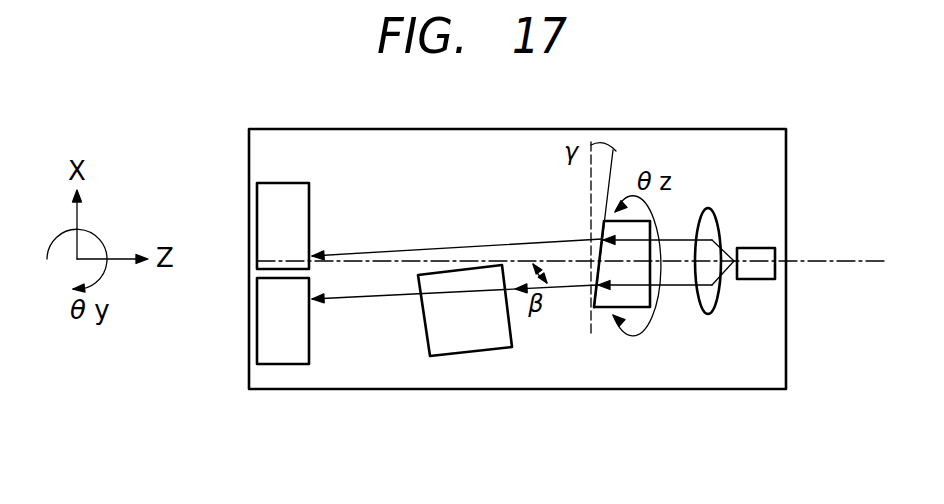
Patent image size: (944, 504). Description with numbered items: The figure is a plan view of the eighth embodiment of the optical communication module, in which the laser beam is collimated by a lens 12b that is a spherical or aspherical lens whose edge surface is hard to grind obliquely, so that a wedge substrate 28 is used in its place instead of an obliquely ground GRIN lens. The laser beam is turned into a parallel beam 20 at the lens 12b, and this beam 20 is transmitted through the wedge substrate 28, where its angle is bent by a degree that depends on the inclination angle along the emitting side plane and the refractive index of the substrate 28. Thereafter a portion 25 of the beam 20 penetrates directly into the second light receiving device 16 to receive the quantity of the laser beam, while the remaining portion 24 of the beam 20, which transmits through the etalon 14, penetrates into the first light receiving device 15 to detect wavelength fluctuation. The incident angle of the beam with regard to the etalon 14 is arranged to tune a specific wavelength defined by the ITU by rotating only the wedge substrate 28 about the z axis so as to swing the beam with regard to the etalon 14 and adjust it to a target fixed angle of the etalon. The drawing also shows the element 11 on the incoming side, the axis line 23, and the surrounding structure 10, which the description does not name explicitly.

The housing 10 is at (290, 378).
The light source 11 is at (757, 248).
The lens 12b is at (710, 208).
The etalon 14 is at (472, 352).
The first light receiving device 15 is at (257, 340).
The second light receiving device 16 is at (290, 183).
The parallel beam 20 is at (682, 281).
The optical axis 23 is at (517, 258).
The remaining portion of the beam 24 is at (387, 295).
The portion of the beam 25 is at (380, 252).
The wedge substrate 28 is at (603, 310).